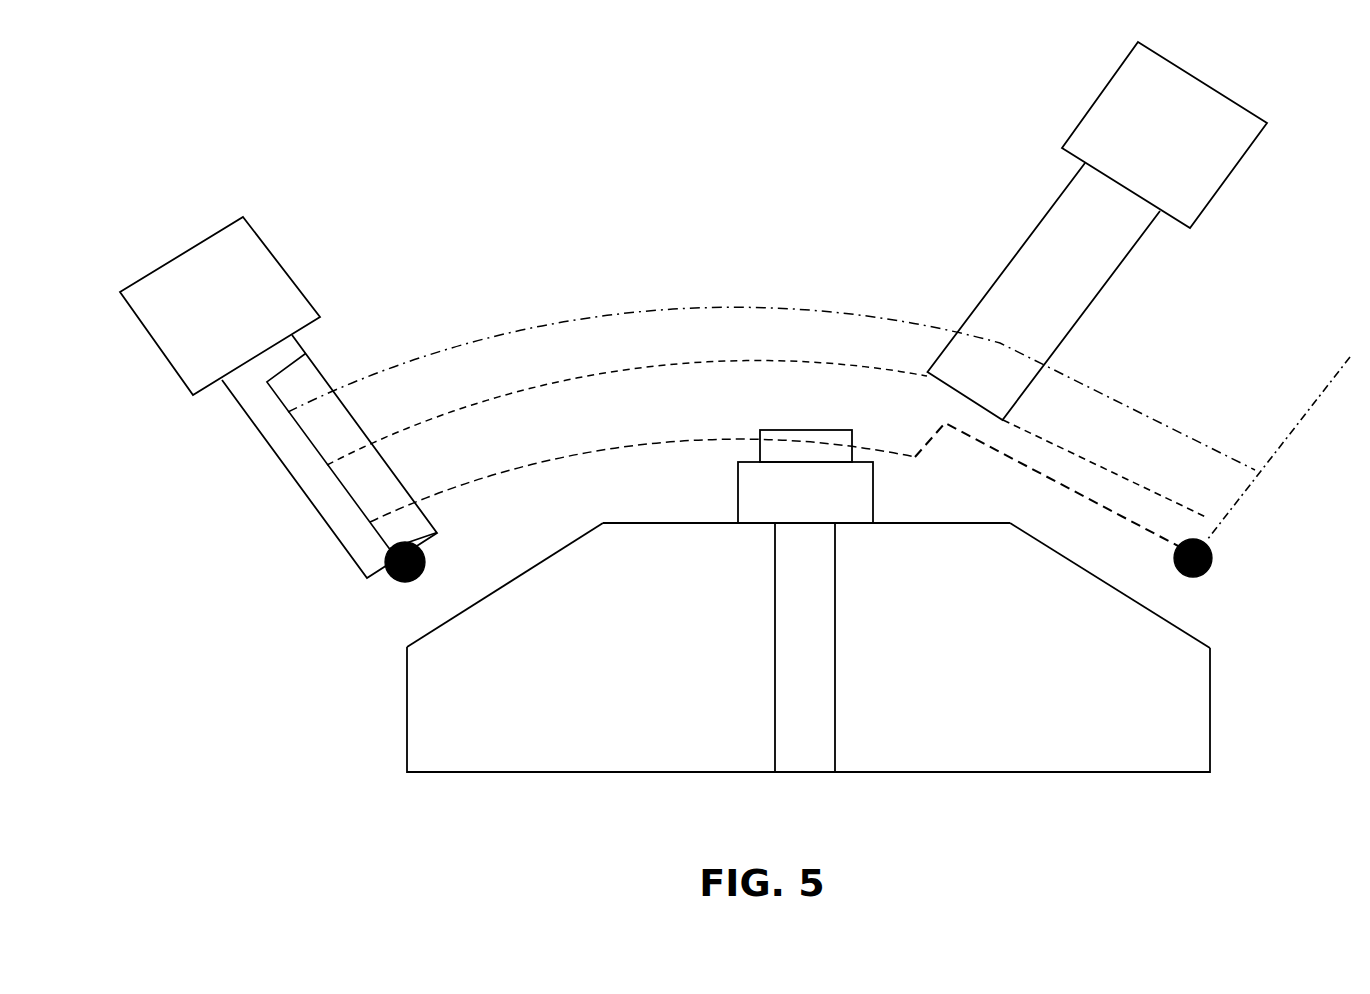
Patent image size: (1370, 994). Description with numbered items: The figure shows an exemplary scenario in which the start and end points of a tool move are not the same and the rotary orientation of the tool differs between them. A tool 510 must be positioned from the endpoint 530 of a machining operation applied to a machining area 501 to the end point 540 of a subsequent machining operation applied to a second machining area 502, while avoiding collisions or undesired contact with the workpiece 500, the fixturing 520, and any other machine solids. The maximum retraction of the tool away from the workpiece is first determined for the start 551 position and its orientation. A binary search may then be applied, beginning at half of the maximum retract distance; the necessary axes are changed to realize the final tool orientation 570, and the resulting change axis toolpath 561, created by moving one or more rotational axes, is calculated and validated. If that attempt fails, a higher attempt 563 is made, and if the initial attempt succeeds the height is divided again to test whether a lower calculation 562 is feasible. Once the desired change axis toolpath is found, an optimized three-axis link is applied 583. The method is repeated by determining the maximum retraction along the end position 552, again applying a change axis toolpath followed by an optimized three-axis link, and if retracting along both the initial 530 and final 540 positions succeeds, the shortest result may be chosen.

The workpiece 500 is at (405, 700).
The machining area 501 is at (473, 608).
The second machining area 502 is at (1110, 593).
The tool 510 is at (308, 300).
The fixturing 520 is at (738, 498).
The endpoint of machining operation 530 is at (390, 580).
The end point of subsequent machining operation 540 is at (1213, 557).
The start position 551 is at (306, 355).
The end position 552 is at (1350, 357).
The change axis toolpath 561 is at (702, 375).
The lower calculation 562 is at (738, 444).
The higher attempt 563 is at (675, 310).
The final tool orientation 570 is at (1075, 128).
The optimized 3-axis link 583 is at (1073, 440).